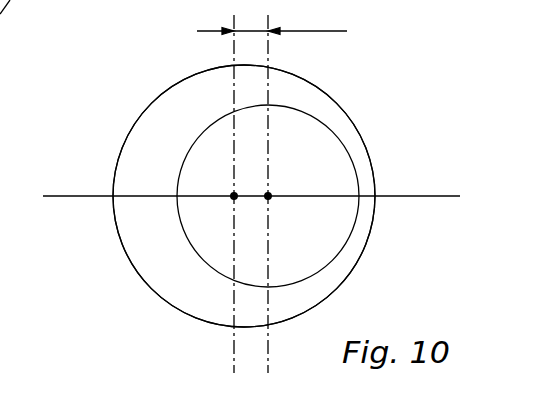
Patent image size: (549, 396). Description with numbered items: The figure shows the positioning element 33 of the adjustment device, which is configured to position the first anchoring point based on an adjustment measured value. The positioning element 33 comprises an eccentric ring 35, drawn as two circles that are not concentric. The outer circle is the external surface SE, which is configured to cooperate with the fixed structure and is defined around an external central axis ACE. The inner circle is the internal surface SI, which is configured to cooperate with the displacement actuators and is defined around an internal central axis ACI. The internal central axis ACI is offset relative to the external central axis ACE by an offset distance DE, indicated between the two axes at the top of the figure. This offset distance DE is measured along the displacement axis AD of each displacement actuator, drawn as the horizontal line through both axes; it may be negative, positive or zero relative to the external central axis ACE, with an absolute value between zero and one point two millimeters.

The positioning element 33 is at (214, 174).
The eccentric ring 35 is at (162, 82).
The external surface SE is at (332, 100).
The internal surface SI is at (355, 212).
The displacement axis AD is at (70, 196).
The external central axis ACE is at (234, 197).
The internal central axis ACI is at (272, 187).
The offset distance DE is at (272, 21).